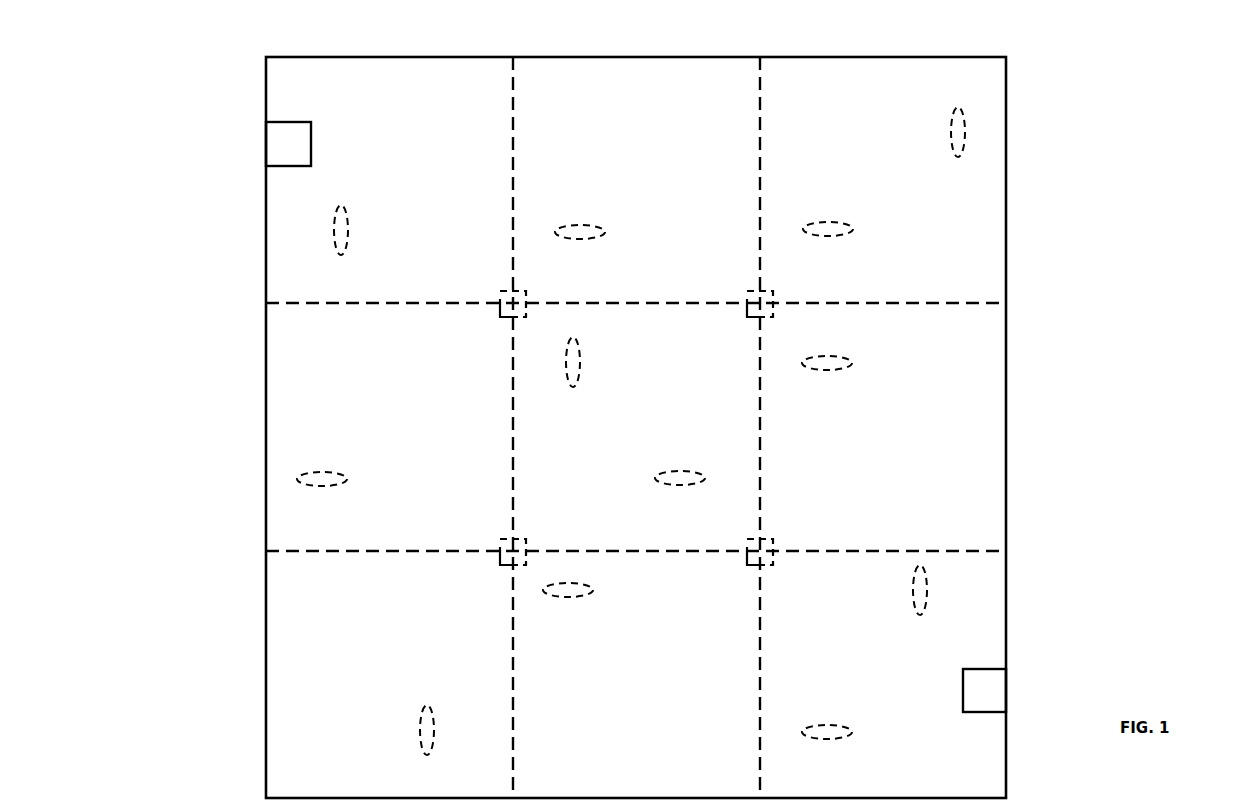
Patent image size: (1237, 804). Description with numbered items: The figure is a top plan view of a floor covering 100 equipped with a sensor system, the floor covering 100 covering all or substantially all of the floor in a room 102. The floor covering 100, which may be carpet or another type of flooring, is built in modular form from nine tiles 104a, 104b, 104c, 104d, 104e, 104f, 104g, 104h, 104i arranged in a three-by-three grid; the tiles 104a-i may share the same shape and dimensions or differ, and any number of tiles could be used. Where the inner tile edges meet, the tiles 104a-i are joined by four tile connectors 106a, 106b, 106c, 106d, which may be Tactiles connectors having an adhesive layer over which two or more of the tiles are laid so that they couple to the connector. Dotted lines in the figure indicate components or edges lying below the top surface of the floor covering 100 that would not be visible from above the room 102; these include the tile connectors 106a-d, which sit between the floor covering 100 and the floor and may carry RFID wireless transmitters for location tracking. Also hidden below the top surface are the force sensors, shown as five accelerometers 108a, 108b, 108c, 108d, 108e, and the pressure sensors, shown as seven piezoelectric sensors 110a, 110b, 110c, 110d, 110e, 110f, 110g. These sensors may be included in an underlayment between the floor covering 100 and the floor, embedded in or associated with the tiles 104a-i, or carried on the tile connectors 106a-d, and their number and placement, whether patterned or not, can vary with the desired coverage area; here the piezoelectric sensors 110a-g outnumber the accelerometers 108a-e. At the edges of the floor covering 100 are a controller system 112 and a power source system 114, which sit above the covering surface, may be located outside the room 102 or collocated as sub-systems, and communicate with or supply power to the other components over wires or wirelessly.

The floor covering 100 is at (773, 70).
The room 102 is at (1006, 108).
The tile 104a is at (476, 78).
The tile 104b is at (723, 78).
The tile 104c is at (975, 78).
The tile 104d is at (474, 430).
The tile 104e is at (728, 430).
The tile 104f is at (974, 430).
The tile 104g is at (480, 782).
The tile 104h is at (726, 782).
The tile 104i is at (973, 782).
The tile connector 106a is at (498, 291).
The tile connector 106b is at (746, 292).
The tile connector 106c is at (498, 558).
The tile connector 106d is at (748, 563).
The accelerometer 108a is at (368, 200).
The accelerometer 108b is at (952, 145).
The accelerometer 108c is at (580, 378).
The accelerometer 108d is at (422, 722).
The accelerometer 108e is at (910, 599).
The piezoelectric sensor 110a is at (587, 223).
The piezoelectric sensor 110b is at (845, 233).
The piezoelectric sensor 110c is at (335, 485).
The piezoelectric sensor 110d is at (655, 480).
The piezoelectric sensor 110e is at (838, 372).
The piezoelectric sensor 110f is at (580, 597).
The piezoelectric sensor 110g is at (848, 727).
The controller system 112 is at (266, 145).
The power source system 114 is at (1006, 687).